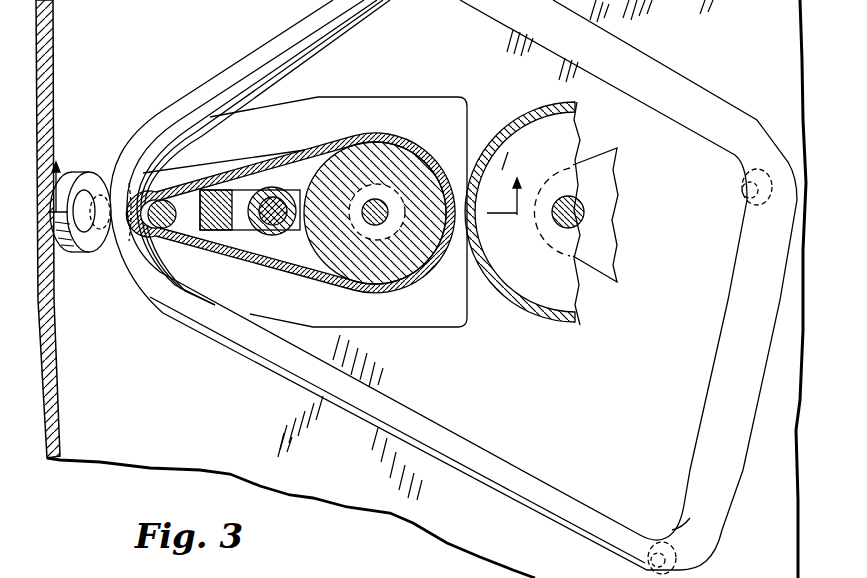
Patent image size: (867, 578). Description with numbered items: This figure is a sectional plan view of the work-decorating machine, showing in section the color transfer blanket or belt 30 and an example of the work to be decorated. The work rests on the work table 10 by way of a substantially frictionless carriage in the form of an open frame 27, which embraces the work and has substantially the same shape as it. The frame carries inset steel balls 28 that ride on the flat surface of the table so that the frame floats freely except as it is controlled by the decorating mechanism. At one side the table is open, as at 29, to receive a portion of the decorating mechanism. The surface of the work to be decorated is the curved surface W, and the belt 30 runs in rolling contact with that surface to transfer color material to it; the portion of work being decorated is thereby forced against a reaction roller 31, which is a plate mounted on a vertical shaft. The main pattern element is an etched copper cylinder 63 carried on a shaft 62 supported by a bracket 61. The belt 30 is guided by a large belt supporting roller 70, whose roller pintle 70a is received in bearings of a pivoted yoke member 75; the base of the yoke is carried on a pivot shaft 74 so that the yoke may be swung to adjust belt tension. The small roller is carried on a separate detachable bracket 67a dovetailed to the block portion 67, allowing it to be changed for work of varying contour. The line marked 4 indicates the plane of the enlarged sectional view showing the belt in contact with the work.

The work table 10 is at (421, 289).
The open frame 27 is at (193, 93).
The curved surface W is at (212, 113).
The inset steel balls 28 is at (748, 196).
The open side of the table 29 is at (420, 328).
The color transfer blanket or belt 30 is at (205, 254).
The reaction roller 31 is at (86, 244).
The section line 4- 4 is at (285, 178).
The bracket 61 is at (604, 249).
The shaft 62 is at (575, 213).
The etched copper cylinder 63 is at (497, 120).
The block portion 67 is at (222, 193).
The detachable bracket 67a is at (192, 200).
The belt supporting roller 70 is at (377, 157).
The roller pintle 70a is at (392, 198).
The pivot shaft 74 is at (267, 238).
The pivoted yoke member 75 is at (300, 235).